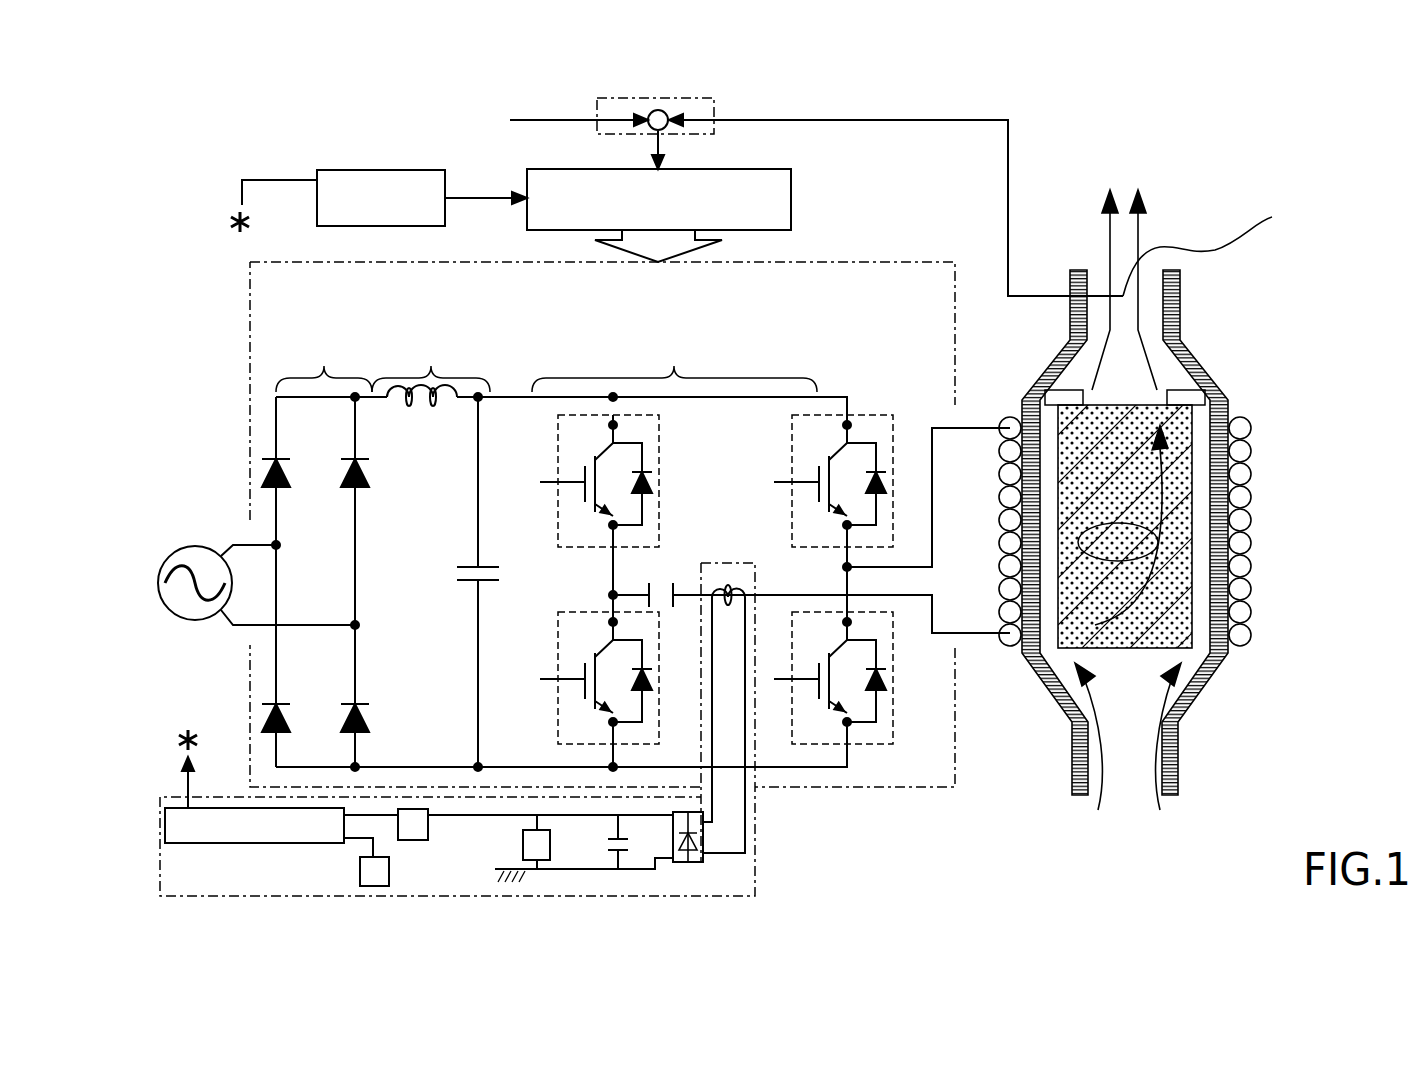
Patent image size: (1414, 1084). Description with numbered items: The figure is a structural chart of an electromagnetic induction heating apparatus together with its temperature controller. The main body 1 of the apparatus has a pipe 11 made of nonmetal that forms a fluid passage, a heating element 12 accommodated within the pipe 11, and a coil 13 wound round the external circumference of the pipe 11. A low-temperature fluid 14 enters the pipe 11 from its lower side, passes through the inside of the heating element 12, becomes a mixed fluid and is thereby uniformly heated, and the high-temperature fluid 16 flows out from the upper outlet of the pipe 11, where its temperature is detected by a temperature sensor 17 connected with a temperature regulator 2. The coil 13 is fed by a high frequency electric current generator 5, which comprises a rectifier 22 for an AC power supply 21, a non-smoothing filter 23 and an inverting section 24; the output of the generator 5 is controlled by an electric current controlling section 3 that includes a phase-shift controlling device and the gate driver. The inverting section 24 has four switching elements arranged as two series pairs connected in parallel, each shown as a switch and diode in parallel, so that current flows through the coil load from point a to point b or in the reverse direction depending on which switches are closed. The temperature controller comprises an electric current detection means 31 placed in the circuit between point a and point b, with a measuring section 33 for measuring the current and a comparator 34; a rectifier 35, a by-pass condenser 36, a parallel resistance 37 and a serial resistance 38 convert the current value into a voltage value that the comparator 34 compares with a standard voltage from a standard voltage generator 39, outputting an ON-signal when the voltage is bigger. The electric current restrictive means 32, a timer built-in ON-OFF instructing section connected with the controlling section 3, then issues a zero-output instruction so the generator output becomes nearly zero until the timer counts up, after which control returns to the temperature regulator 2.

The main body 1 is at (1226, 287).
The temperature regulator 2 is at (715, 100).
The electric current controlling section 3 is at (791, 197).
The high frequency electric current generator 5 is at (250, 262).
The pipe 11 is at (1195, 357).
The heating element 12 is at (1175, 641).
The coil 13 is at (1253, 610).
The low-temperature fluid 14 is at (1128, 754).
The high-temperature fluid 16 is at (1124, 270).
The temperature sensor 17 is at (1209, 240).
The AC power supply 21 is at (203, 548).
The rectifier 22 is at (318, 352).
The non-smoothing filter 23 is at (430, 515).
The inverting section 24 is at (770, 525).
The electric current detection means 31 is at (755, 850).
The electric current restrictive means 32 is at (318, 172).
The measuring section 33 is at (722, 590).
The comparator 34 is at (184, 845).
The rectifier 35 is at (700, 862).
The by-pass condenser 36 is at (612, 843).
The parallel resistance 37 is at (523, 843).
The serial resistance 38 is at (410, 843).
The standard voltage generator 39 is at (360, 878).